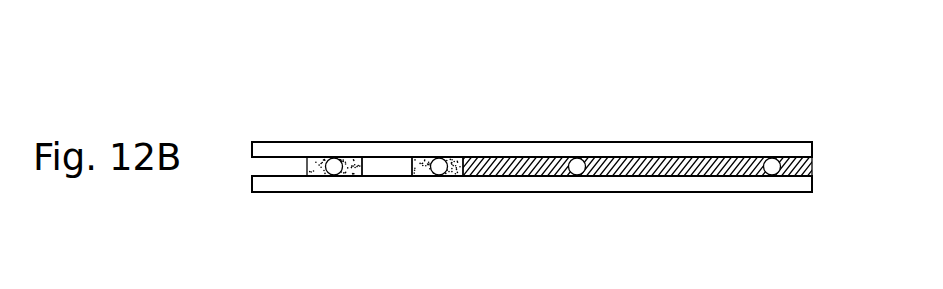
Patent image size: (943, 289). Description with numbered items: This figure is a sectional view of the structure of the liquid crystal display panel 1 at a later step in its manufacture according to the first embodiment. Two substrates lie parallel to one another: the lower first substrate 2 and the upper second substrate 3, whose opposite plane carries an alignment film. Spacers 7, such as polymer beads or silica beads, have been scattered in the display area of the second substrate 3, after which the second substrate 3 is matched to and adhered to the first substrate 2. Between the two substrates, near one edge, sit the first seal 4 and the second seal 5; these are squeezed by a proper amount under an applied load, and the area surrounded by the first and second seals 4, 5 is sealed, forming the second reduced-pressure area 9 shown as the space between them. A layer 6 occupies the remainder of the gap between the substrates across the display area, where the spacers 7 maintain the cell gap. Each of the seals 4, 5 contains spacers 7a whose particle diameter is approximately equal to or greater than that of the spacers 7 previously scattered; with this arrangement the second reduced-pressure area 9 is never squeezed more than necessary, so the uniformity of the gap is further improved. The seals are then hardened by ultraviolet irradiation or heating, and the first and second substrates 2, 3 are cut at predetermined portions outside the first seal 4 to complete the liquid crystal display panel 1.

The liquid crystal display panel 1 is at (603, 87).
The first substrate 2 is at (786, 193).
The second substrate 3 is at (801, 146).
The first seal 4 is at (417, 163).
The second seal 5 is at (316, 165).
The liquid crystal / filler layer 6 is at (680, 165).
The spacers 7 is at (770, 160).
The spacers contained in seal material 7a is at (334, 173).
The second reduced-pressure area 9 is at (386, 170).